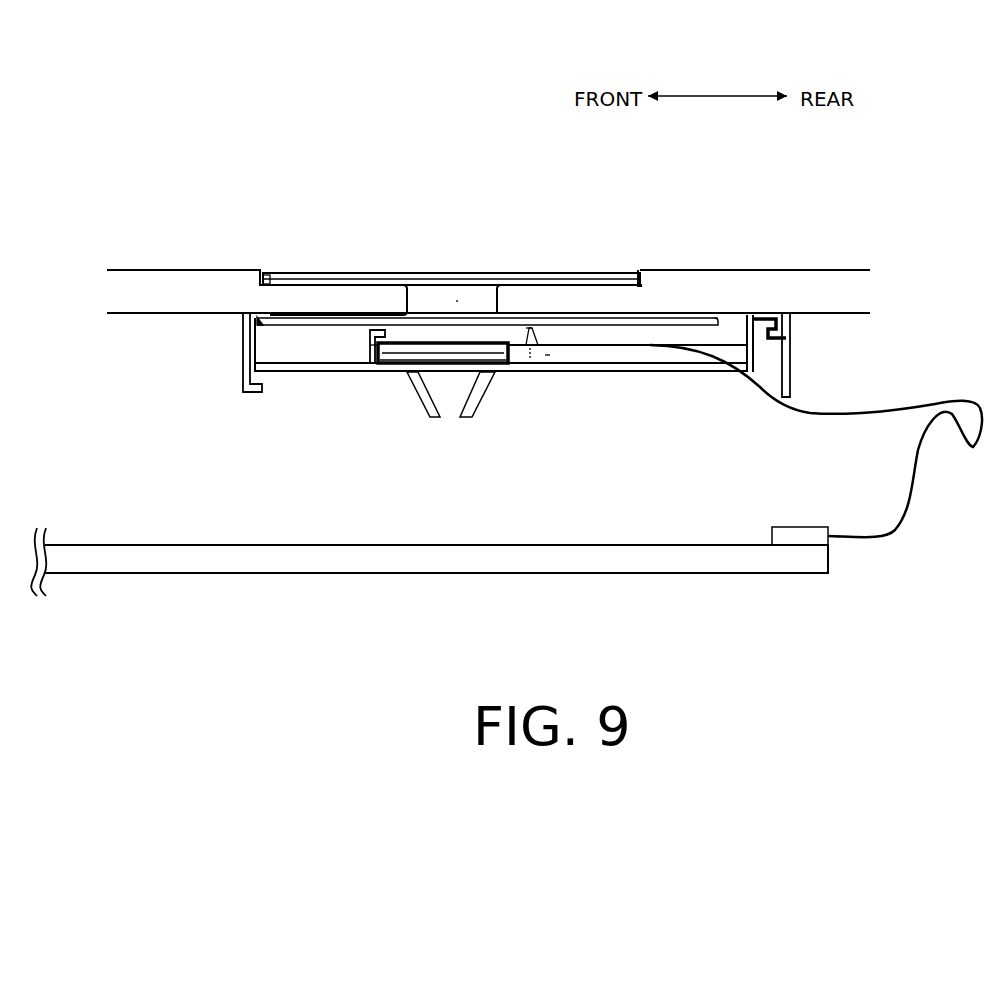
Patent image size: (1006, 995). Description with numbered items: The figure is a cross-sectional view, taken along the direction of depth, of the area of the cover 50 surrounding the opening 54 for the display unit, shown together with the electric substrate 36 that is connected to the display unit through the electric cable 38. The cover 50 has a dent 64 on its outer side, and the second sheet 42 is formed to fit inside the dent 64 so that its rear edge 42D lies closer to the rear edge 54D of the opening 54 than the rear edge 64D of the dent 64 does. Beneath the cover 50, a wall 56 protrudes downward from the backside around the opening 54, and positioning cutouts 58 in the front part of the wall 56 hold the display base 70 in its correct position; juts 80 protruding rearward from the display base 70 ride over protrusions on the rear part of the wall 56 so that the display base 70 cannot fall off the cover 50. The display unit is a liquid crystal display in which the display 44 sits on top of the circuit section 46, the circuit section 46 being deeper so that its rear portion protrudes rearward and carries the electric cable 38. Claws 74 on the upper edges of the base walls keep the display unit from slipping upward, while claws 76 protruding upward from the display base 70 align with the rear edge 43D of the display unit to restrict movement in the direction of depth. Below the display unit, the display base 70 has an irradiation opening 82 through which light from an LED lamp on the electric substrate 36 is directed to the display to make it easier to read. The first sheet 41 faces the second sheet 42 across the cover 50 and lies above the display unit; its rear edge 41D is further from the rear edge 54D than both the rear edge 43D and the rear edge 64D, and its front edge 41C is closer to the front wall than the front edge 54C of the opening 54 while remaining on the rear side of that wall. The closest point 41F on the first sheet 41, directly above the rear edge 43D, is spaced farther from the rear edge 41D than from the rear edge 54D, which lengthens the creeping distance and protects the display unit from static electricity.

The electric substrate 36 is at (737, 549).
The electric cable 38 is at (893, 539).
The first sheet 41 is at (668, 322).
The front edge of the first sheet 41C is at (267, 325).
The rear edge of the first sheet 41D is at (723, 318).
The closest point 41F is at (538, 318).
The second sheet 42 is at (362, 277).
The rear edge of the second sheet 42D is at (638, 271).
The rear edge of the display unit 43D is at (527, 328).
The display 44 is at (357, 372).
The circuit section 46 is at (400, 373).
The cover 50 is at (138, 283).
The opening 54 is at (457, 300).
The front edge of the opening 54C is at (420, 298).
The rear edge of the opening 54D is at (496, 305).
The wall 56 is at (255, 328).
The positioning cutouts 58 is at (790, 382).
The dent 64 is at (263, 264).
The rear edge of the dent 64D is at (643, 270).
The display base 70 is at (275, 371).
The claws 74 is at (370, 345).
The claws 76 is at (545, 355).
The juts 80 is at (243, 394).
The irradiation opening 82 is at (450, 417).